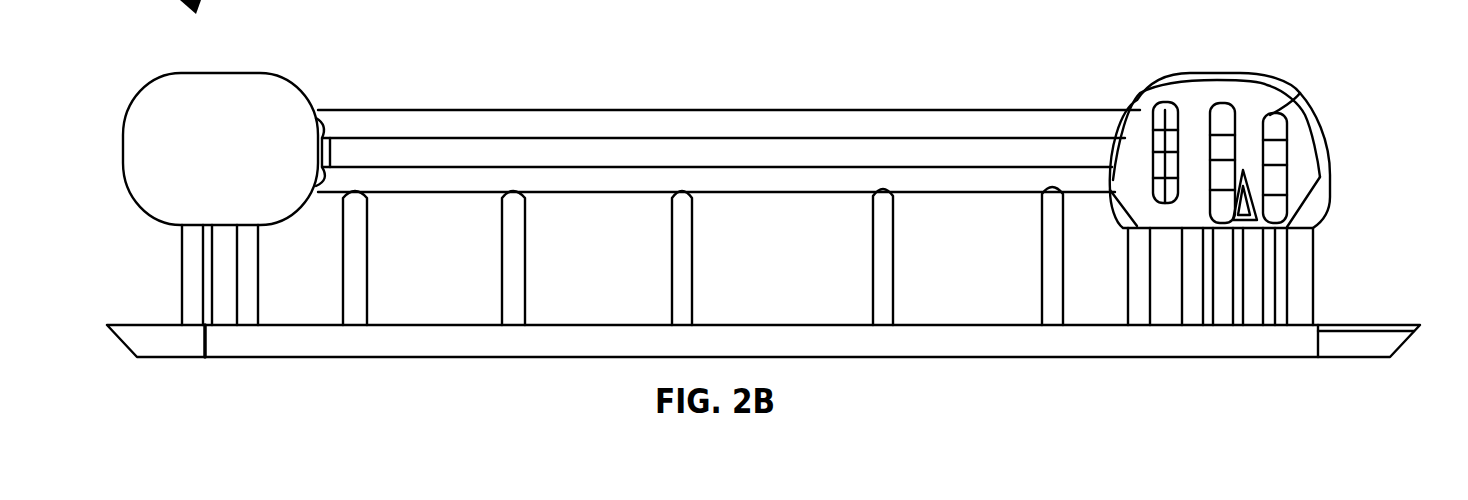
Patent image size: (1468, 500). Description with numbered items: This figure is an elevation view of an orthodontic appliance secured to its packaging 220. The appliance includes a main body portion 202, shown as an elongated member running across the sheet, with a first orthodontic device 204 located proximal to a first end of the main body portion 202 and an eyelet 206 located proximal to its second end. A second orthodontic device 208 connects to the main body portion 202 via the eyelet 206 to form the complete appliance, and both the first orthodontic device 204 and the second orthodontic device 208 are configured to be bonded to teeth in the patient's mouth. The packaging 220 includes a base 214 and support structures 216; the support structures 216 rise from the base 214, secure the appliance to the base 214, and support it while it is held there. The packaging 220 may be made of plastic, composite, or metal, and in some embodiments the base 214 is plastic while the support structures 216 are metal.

The main body portion 202 is at (680, 112).
The first orthodontic device 204 is at (242, 73).
The eyelet 206 is at (1245, 72).
The second orthodontic device 208 is at (1173, 73).
The base 214 is at (383, 357).
The support structures 216 is at (367, 240).
The packaging 220 is at (1343, 287).